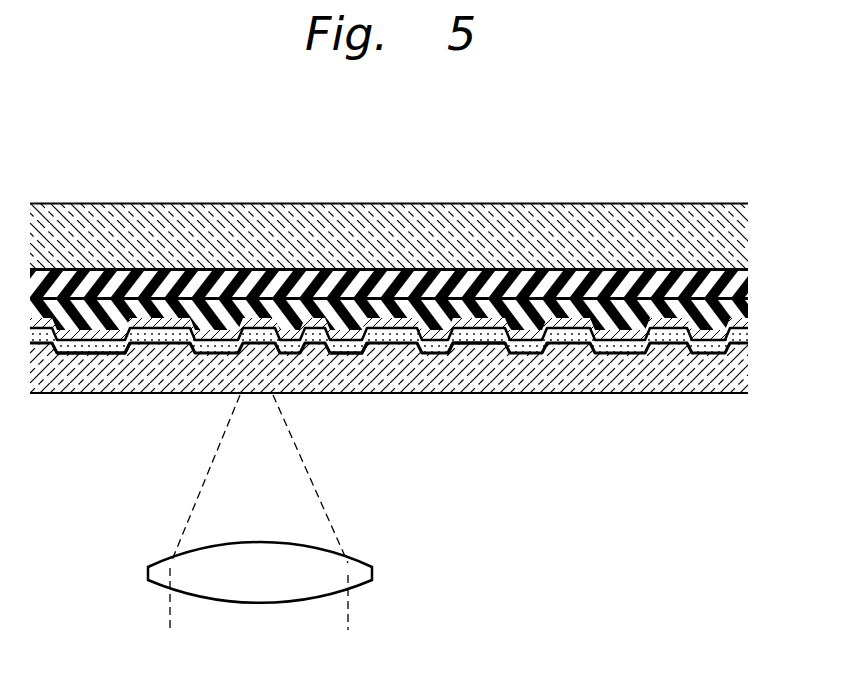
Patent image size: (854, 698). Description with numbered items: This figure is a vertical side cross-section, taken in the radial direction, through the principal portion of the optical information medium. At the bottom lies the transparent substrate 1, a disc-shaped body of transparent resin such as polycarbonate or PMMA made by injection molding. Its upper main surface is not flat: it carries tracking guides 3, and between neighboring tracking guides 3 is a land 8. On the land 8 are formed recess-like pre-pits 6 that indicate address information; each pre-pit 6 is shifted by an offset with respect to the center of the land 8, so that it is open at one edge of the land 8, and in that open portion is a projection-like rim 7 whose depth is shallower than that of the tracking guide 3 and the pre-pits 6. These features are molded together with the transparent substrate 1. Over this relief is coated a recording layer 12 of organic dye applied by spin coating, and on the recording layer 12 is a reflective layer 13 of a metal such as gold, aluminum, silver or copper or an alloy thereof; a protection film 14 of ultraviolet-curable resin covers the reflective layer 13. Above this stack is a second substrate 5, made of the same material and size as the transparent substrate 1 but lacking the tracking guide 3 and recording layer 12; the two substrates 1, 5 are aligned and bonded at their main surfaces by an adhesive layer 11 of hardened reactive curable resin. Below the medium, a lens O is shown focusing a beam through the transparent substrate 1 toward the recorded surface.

The transparent substrate 1 is at (413, 378).
The tracking guide 3 is at (349, 351).
The substrate 5 is at (400, 230).
The pre-pit 6 is at (108, 350).
The rim 7 is at (461, 347).
The land 8 is at (583, 344).
The adhesive layer 11 is at (97, 283).
The recording layer 12 is at (535, 345).
The reflective layer 13 is at (655, 333).
The protection film 14 is at (75, 312).
The objective lens O is at (158, 573).